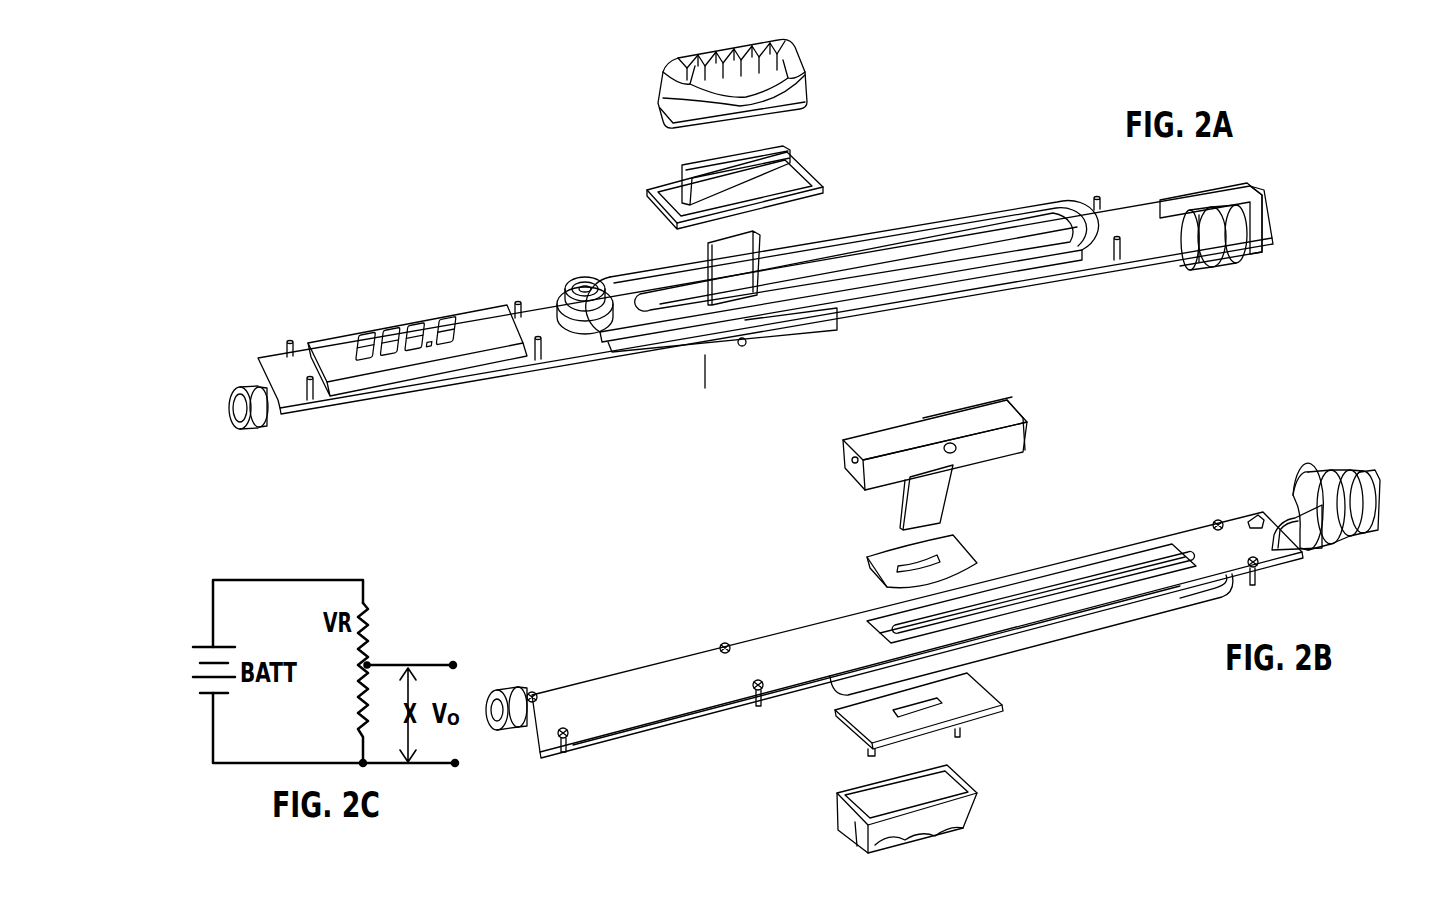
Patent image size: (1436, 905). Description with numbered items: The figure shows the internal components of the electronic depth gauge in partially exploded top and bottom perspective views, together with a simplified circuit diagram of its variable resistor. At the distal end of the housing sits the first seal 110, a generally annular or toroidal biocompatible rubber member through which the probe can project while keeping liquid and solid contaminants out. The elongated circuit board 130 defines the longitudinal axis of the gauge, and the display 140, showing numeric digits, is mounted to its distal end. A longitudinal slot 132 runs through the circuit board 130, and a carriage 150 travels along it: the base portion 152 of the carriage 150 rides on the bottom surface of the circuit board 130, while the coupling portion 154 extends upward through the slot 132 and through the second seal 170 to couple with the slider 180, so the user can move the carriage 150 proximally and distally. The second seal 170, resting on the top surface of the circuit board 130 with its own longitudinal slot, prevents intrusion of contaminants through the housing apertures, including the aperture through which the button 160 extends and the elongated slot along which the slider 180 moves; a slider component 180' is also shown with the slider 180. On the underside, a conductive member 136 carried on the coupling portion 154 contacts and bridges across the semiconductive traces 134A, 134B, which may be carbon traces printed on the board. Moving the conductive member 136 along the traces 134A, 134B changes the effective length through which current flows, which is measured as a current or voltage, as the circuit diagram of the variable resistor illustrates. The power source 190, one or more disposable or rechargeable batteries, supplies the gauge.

In FIG. 2A, the first seal 110 is at (250, 383).
In FIG. 2B, the first seal 110 is at (492, 690).
In FIG. 2B, the circuit board 130 is at (668, 692).
In FIG. 2A, the slot 132 is at (893, 258).
In FIG. 2B, the slot 132 is at (1037, 593).
In FIG. 2B, the semiconductive trace 134A is at (1127, 557).
In FIG. 2B, the semiconductive trace 134B is at (1147, 580).
In FIG. 2B, the conductive member 136 is at (867, 570).
In FIG. 2A, the display 140 is at (430, 327).
In FIG. 2B, the carriage 150 is at (837, 453).
In FIG. 2B, the base portion 152 is at (1023, 433).
In FIG. 2B, the coupling portion 154 is at (940, 493).
In FIG. 2A, the button 160 is at (580, 280).
In FIG. 2A, the second seal 170 is at (972, 233).
In FIG. 2B, the second seal 170 is at (1113, 617).
In FIG. 2A, the slider 180 is at (714, 83).
In FIG. 2B, the slider 180 is at (940, 806).
In FIG. 2A, the cap base 180' is at (716, 179).
In FIG. 2B, the cap base 180' is at (958, 714).
In FIG. 2A, the power source 190 is at (1187, 268).
In FIG. 2B, the power source 190 is at (1305, 473).